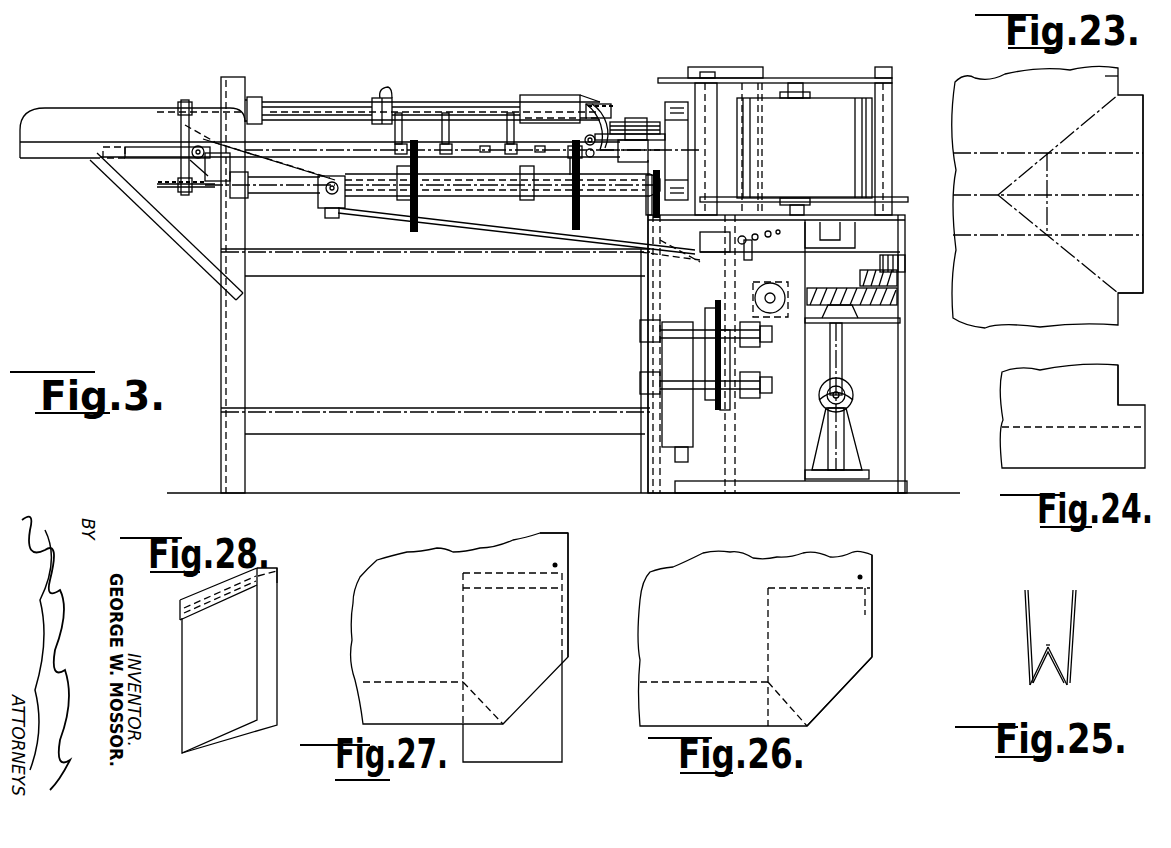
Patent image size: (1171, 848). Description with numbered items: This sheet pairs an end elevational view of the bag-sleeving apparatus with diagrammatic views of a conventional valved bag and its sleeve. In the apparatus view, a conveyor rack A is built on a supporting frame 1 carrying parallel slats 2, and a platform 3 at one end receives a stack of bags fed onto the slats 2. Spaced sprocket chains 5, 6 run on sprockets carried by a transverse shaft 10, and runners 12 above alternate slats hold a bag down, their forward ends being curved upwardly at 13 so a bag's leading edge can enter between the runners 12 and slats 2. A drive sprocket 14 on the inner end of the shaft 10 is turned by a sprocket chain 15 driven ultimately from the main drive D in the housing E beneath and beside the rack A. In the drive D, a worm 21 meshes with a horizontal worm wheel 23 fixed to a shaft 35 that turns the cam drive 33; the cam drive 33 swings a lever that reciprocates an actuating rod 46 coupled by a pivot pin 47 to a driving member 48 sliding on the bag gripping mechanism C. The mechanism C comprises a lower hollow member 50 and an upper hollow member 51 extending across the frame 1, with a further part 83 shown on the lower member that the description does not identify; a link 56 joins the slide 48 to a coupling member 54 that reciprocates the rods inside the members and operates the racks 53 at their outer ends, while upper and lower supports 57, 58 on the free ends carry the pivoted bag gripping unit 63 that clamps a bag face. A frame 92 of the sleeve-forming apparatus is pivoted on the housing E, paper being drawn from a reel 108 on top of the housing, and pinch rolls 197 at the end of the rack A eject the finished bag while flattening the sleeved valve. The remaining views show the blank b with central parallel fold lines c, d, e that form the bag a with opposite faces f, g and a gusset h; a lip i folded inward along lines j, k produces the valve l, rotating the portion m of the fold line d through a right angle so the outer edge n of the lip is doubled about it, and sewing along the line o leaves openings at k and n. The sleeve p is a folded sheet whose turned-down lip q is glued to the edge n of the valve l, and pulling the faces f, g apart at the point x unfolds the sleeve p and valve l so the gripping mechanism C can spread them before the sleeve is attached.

In FIG. 3, the supporting frame 1 is at (222, 310).
In FIG. 3, the parallel slats 2 is at (480, 148).
In FIG. 3, the platform 3 is at (65, 114).
In FIG. 3, the sprocket chain 5 is at (420, 215).
In FIG. 3, the sprocket chain 6 is at (572, 212).
In FIG. 3, the shaft 10 is at (486, 186).
In FIG. 3, the runners 12 is at (455, 143).
In FIG. 3, the upwardly curved ends of runners 13 is at (455, 112).
In FIG. 3, the drive sprocket 14 is at (650, 205).
In FIG. 3, the sprocket chain 15 is at (640, 265).
In FIG. 3, the worm 21 is at (767, 308).
In FIG. 3, the horizontal worm wheel 23 is at (898, 296).
In FIG. 3, the cam drive 33 is at (892, 262).
In FIG. 3, the shaft 35 is at (842, 356).
In FIG. 3, the actuating rod 46 is at (472, 228).
In FIG. 3, the pivot pin 47 is at (337, 218).
In FIG. 3, the driving member 48 is at (323, 206).
In FIG. 3, the lower hollow supporting member 50 is at (275, 102).
In FIG. 3, the upper hollow supporting member 51 is at (283, 186).
In FIG. 3, the racks 53 is at (605, 106).
In FIG. 3, the coupling member 54 is at (185, 176).
In FIG. 3, the link 56 is at (272, 170).
In FIG. 3, the upper support 57 is at (556, 100).
In FIG. 3, the lower support 58 is at (570, 160).
In FIG. 3, the upper bag gripping unit 63 is at (631, 126).
In FIG. 3, the collar 83 is at (393, 103).
In FIG. 3, the frame 92 is at (748, 75).
In FIG. 3, the reel 108 is at (860, 135).
In FIG. 3, the pinch rolls 197 is at (670, 100).
In FIG. 3, the conveyor rack A is at (405, 238).
In FIG. 3, the bag gripping mechanism C is at (318, 102).
In FIG. 3, the drive D is at (745, 400).
In FIG. 3, the housing E is at (905, 412).
In FIG. 26, the valved bag a is at (862, 565).
In FIG. 27, the valved bag a is at (552, 553).
In FIG. 23, the blank b is at (1107, 82).
In FIG. 23, the fold line c is at (958, 153).
In FIG. 25, the fold line c is at (1030, 688).
In FIG. 23, the fold line d is at (965, 193).
In FIG. 24, the fold line d is at (1020, 427).
In FIG. 25, the fold line d is at (1050, 647).
In FIG. 26, the fold line d is at (650, 682).
In FIG. 23, the fold line e is at (1000, 228).
In FIG. 25, the fold line e is at (1069, 688).
In FIG. 25, the bag face f is at (1028, 628).
In FIG. 25, the bag face g is at (1072, 622).
In FIG. 25, the gusset h is at (1056, 660).
In FIG. 23, the lip i is at (1130, 130).
In FIG. 24, the lip i is at (1122, 420).
In FIG. 23, the fold line j is at (1075, 128).
In FIG. 23, the fold line k is at (1080, 262).
In FIG. 26, the fold line k is at (845, 688).
In FIG. 26, the valve structure l is at (860, 648).
In FIG. 27, the valve structure l is at (545, 615).
In FIG. 23, the fold line portion m is at (1072, 193).
In FIG. 26, the fold line portion m is at (768, 633).
In FIG. 27, the fold line portion m is at (463, 635).
In FIG. 23, the outer edge of lip n is at (1146, 257).
In FIG. 26, the outer edge of lip n is at (786, 588).
In FIG. 26, the sewn end line o is at (874, 590).
In FIG. 27, the sewn end line o is at (569, 533).
In FIG. 27, the sleeve p is at (555, 697).
In FIG. 28, the sleeve p is at (274, 635).
In FIG. 27, the sleeve lip q is at (470, 580).
In FIG. 28, the sleeve lip q is at (182, 615).
In FIG. 26, the point X x is at (863, 576).
In FIG. 27, the point X x is at (558, 565).